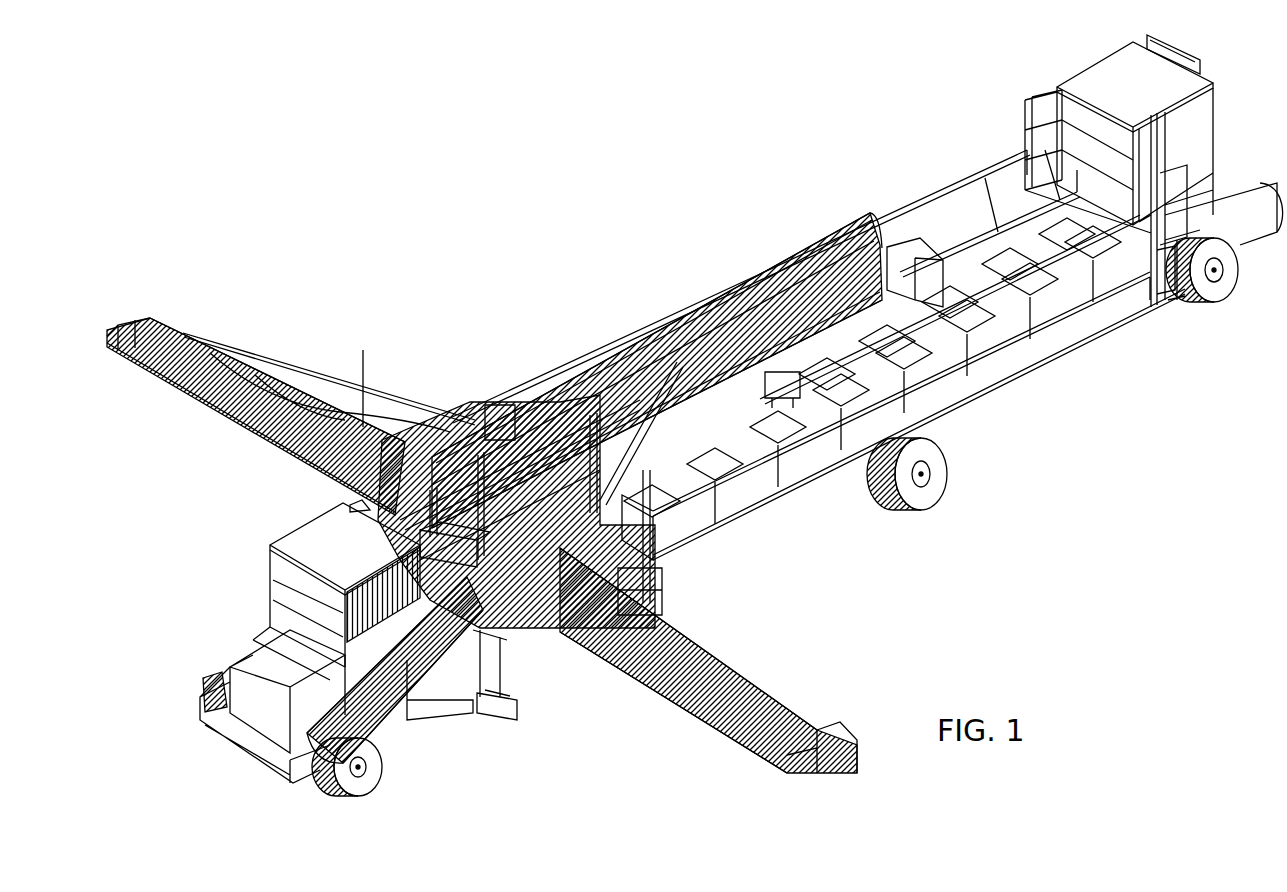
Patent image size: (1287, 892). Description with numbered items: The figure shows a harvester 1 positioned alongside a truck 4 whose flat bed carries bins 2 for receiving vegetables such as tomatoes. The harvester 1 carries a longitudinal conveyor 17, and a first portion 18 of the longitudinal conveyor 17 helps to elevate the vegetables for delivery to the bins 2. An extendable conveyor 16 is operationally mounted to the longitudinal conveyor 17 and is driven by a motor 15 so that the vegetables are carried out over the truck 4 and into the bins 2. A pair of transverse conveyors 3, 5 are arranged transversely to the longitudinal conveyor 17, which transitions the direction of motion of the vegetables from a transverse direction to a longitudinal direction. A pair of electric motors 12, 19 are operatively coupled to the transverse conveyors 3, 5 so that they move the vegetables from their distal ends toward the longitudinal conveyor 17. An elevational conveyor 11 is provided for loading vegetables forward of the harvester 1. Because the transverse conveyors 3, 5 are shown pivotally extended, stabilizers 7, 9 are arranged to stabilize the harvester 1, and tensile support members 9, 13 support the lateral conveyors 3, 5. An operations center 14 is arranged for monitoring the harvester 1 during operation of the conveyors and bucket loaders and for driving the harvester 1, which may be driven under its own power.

The harvester 1 is at (574, 176).
The bins 2 is at (1108, 277).
The transverse conveyor 3 is at (243, 352).
The truck 4 is at (1210, 204).
The transverse conveyor 5 is at (780, 703).
The stabilizer 7 is at (516, 711).
The stabilizer 9 is at (662, 603).
The elevational conveyor 11 is at (398, 712).
The electric motor 12 is at (352, 508).
The tensile support member 13 is at (386, 388).
The operations center 14 is at (320, 615).
The motor 15 is at (795, 383).
The extendable conveyor 16 is at (958, 255).
The longitudinal conveyor 17 is at (722, 362).
The first portion 18 is at (560, 415).
The electric motor 19 is at (500, 410).